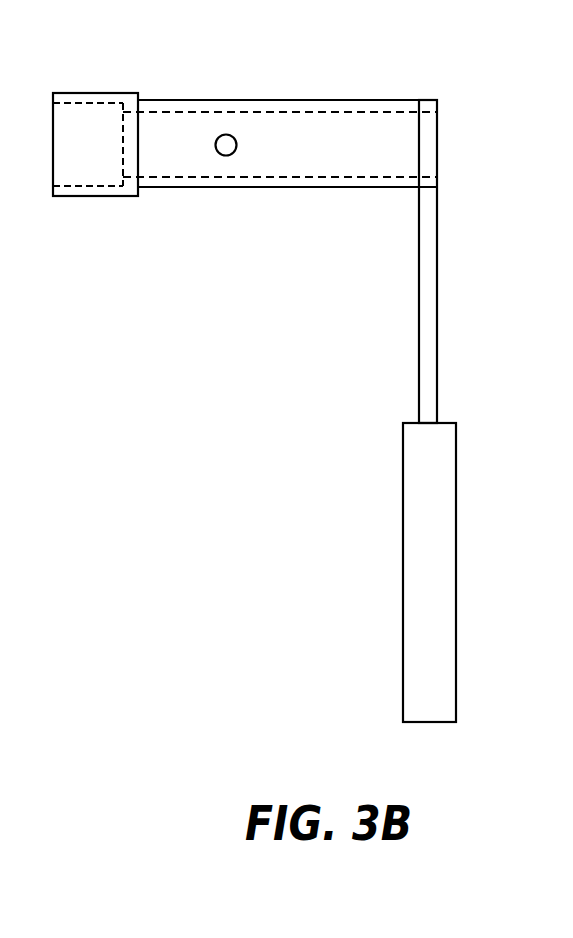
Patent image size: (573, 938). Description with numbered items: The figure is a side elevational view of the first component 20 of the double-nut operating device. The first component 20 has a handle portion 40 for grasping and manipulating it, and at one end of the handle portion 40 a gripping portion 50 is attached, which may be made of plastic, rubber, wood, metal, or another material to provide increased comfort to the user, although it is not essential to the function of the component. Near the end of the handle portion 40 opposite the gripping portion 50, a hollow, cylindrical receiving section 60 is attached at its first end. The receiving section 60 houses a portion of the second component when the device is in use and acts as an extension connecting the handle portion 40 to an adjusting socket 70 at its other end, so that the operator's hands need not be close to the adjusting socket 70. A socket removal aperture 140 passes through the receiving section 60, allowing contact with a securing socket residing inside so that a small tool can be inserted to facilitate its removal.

The first component 20 is at (240, 376).
The handle portion 40 is at (463, 326).
The gripping portion 50 is at (417, 625).
The receiving section 60 is at (223, 188).
The adjusting socket 70 is at (65, 194).
The socket removal aperture 140 is at (229, 134).